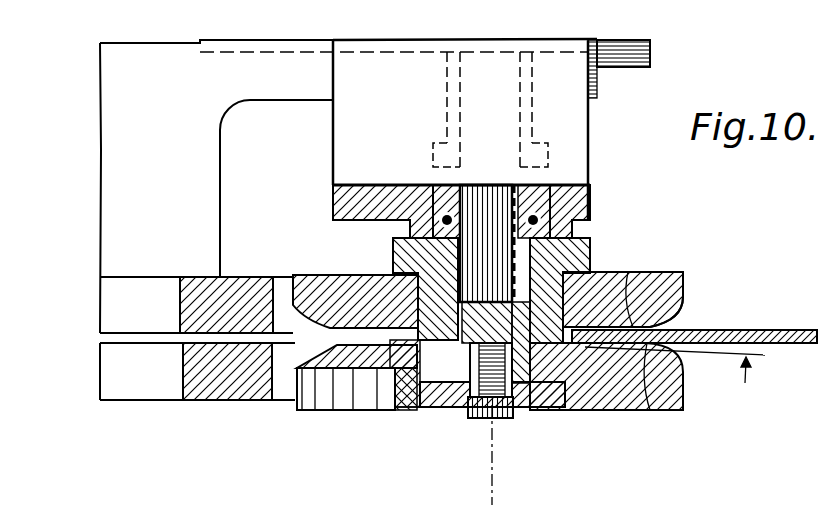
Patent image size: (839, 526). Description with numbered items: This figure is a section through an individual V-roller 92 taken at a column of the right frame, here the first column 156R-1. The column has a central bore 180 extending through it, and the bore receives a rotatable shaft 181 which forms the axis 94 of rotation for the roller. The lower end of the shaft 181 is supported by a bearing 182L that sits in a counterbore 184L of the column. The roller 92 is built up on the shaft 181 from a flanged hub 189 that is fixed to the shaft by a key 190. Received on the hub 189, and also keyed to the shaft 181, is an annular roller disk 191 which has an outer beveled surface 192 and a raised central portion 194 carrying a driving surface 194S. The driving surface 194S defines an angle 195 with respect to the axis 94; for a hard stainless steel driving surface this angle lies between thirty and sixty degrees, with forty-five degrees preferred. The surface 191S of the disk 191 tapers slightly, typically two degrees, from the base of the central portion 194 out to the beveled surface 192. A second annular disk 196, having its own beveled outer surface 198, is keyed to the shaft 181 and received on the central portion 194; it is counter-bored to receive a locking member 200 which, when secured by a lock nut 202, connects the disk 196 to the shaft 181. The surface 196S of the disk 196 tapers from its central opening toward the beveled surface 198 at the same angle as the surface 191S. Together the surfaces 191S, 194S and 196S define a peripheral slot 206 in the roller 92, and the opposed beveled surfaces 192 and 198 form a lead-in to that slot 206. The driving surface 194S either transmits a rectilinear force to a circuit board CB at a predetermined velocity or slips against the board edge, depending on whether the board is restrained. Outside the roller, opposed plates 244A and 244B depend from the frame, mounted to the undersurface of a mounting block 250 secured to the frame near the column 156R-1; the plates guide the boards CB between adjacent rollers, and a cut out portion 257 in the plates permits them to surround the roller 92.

The mounting block 250 is at (198, 97).
The first column 156R-1 is at (365, 148).
The cut out portion 257 is at (285, 283).
The plate 244A is at (166, 297).
The plate 244B is at (147, 378).
The central bore 180 is at (545, 35).
The counterbore 184L is at (440, 175).
The bearing 182L is at (535, 181).
The shaft 181 is at (450, 166).
The flanged hub 189 is at (592, 237).
The key 190 is at (582, 273).
The surface of the disk 191S is at (627, 272).
The annular roller disk 191 is at (688, 285).
The outer beveled surface 192 is at (670, 320).
The circuit board CB is at (798, 330).
The raised central portion 194 is at (385, 318).
The angle 195 is at (415, 300).
The driving surface 194S is at (600, 395).
The second annular disk 196 is at (595, 410).
The surface of the disk 196S is at (660, 408).
The locking member 200 is at (530, 393).
The lock nut 202 is at (516, 415).
The peripheral slot 206 is at (335, 347).
The beveled outer surface 198 is at (352, 352).
The V-roller 92 is at (420, 437).
The axis 94 is at (487, 487).